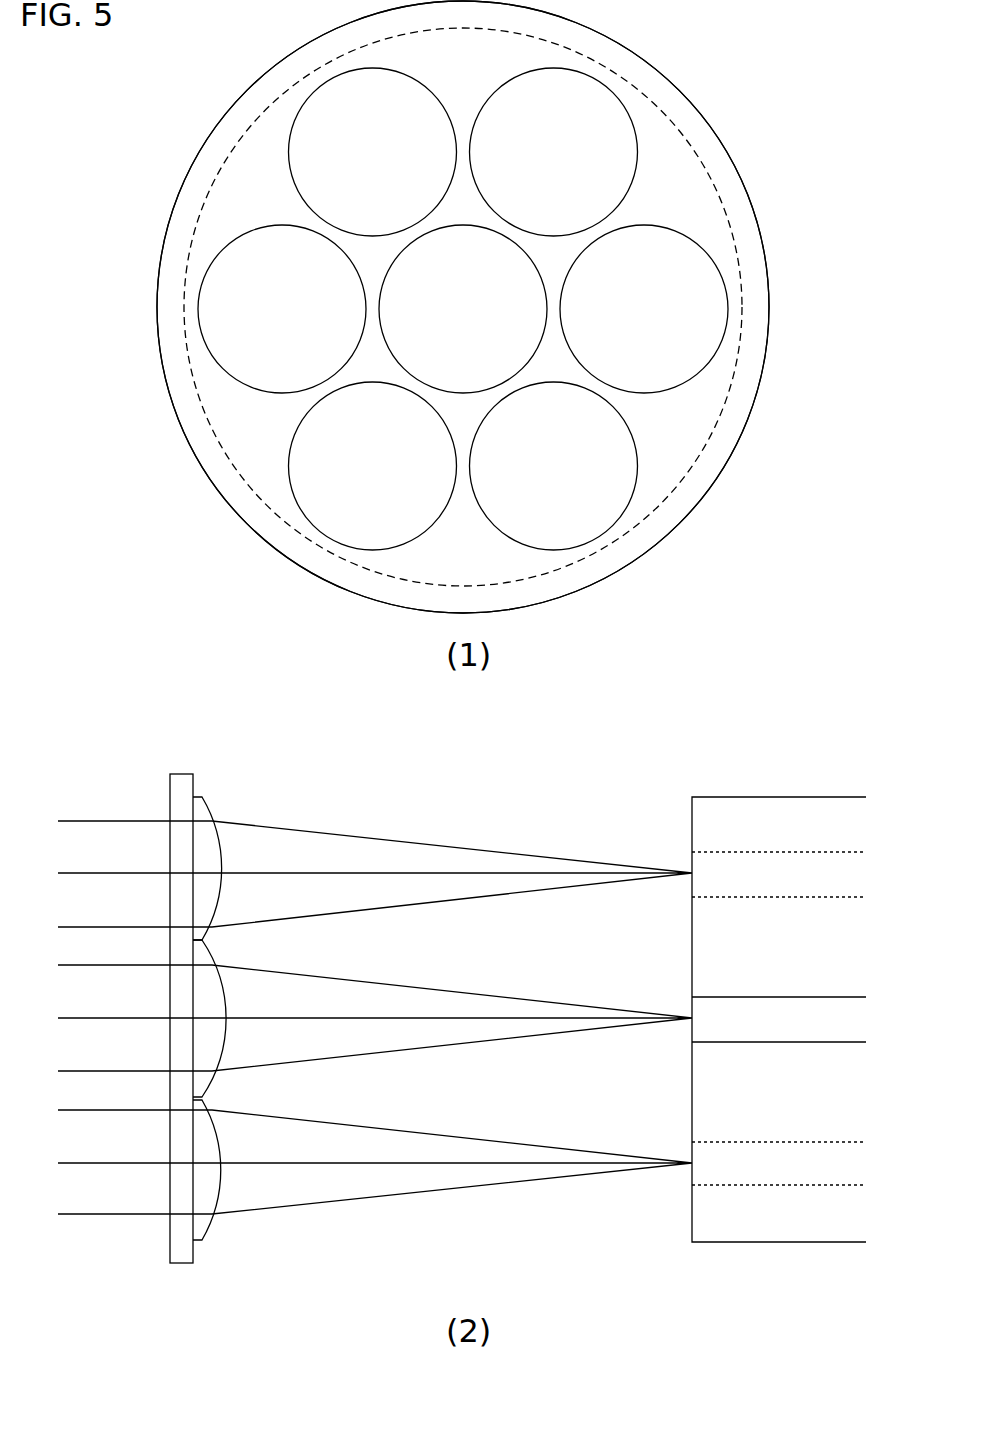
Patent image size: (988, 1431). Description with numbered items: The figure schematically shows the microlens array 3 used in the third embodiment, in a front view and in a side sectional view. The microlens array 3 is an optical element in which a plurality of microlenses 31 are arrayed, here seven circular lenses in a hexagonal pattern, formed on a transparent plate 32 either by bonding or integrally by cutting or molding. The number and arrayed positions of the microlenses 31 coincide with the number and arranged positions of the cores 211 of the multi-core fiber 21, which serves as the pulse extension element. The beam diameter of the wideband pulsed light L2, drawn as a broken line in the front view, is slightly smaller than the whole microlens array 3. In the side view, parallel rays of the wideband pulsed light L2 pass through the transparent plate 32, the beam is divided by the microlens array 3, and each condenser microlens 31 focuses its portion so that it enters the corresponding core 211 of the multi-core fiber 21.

The microlens array 3 is at (770, 87).
The microlens 31 is at (310, 90).
The transparent plate 32 is at (240, 517).
The wideband pulsed light L2 is at (730, 228).
The multi-core fiber 21 is at (777, 795).
The core 211 is at (743, 868).